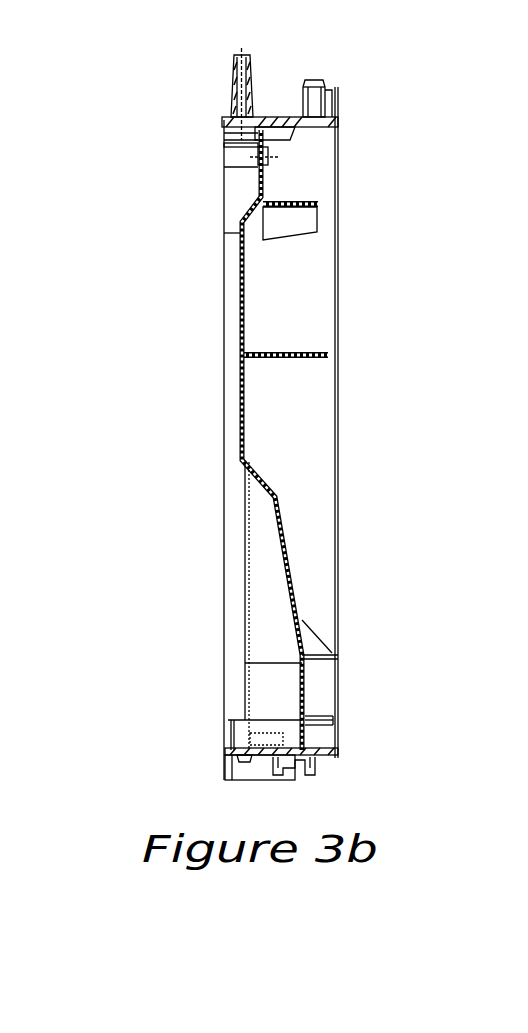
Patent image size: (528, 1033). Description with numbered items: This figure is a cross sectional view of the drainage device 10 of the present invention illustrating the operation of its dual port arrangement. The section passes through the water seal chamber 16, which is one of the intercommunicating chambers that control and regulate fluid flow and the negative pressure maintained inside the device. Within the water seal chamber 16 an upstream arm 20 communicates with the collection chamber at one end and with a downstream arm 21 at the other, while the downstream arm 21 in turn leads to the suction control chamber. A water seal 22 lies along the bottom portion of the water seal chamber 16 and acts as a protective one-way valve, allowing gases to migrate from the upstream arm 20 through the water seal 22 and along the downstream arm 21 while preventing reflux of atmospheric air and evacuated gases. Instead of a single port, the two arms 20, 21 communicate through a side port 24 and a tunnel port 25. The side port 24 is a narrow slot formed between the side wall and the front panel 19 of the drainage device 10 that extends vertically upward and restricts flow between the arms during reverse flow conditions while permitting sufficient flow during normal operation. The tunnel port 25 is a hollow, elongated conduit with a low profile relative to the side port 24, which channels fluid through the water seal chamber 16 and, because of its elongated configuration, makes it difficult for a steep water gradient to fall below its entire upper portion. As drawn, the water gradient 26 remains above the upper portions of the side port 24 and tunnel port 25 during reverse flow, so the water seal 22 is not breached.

The drainage device 10 is at (346, 81).
The water seal chamber 16 is at (236, 577).
The front panel 19 is at (224, 285).
The upstream arm 20 is at (232, 384).
The downstream arm 21 is at (267, 605).
The water seal 22 is at (305, 715).
The side port 24 is at (226, 736).
The tunnel port 25 is at (274, 757).
The water gradient 26 is at (297, 733).